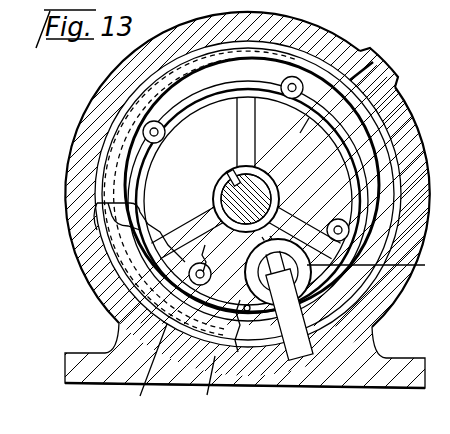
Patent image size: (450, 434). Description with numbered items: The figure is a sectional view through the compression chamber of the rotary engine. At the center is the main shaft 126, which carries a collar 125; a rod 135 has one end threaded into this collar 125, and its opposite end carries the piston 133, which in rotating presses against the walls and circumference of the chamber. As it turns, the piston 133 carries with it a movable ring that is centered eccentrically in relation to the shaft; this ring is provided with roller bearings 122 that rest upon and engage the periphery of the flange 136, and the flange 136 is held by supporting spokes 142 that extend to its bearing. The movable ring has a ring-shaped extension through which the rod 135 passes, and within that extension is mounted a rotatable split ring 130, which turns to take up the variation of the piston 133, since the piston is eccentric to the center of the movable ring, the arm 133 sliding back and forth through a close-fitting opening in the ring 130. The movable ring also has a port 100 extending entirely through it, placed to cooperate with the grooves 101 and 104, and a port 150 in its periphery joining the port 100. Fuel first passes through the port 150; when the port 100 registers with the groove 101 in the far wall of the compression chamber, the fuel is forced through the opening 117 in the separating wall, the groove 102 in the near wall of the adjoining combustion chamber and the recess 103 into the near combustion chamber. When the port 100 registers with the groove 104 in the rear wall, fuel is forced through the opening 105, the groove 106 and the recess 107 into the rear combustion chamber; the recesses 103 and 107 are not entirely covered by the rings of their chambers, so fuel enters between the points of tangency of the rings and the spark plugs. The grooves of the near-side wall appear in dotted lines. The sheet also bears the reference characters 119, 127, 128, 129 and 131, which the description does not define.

The port 100 is at (247, 311).
The groove 101 is at (192, 236).
The groove 102 is at (144, 371).
The recess 103 is at (206, 387).
The groove 104 is at (95, 208).
The opening 105 is at (115, 74).
The groove 106 is at (92, 137).
The recess 107 is at (100, 180).
The opening 117 is at (90, 238).
The foot 119 is at (87, 353).
The roller bearings 122 is at (281, 81).
The collar 125 is at (257, 181).
The main shaft 126 is at (258, 192).
The key 127 is at (237, 176).
The drum 128 is at (400, 108).
The spoked wheel 129 is at (353, 243).
The rotatable split ring 130 is at (305, 287).
The eccentric 131 is at (378, 266).
The piston 133 is at (312, 329).
The rod 135 is at (377, 64).
The flange 136 is at (201, 190).
The supporting spokes 142 is at (257, 112).
The port 150 is at (280, 320).